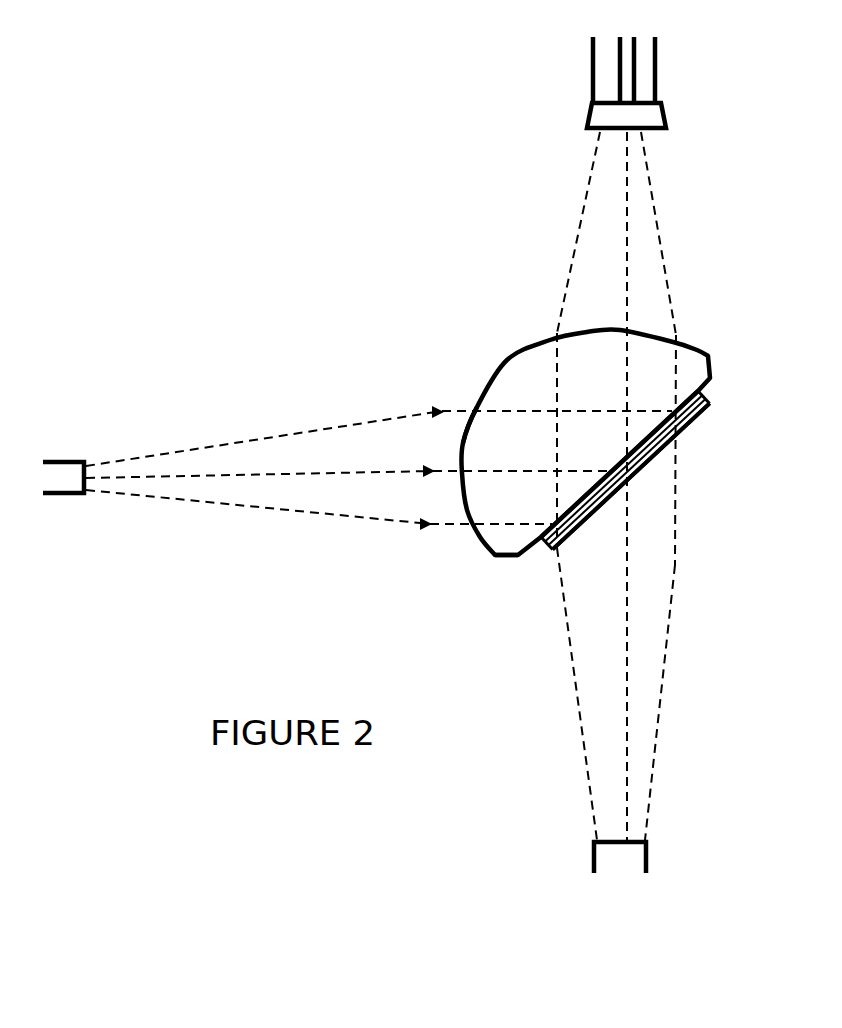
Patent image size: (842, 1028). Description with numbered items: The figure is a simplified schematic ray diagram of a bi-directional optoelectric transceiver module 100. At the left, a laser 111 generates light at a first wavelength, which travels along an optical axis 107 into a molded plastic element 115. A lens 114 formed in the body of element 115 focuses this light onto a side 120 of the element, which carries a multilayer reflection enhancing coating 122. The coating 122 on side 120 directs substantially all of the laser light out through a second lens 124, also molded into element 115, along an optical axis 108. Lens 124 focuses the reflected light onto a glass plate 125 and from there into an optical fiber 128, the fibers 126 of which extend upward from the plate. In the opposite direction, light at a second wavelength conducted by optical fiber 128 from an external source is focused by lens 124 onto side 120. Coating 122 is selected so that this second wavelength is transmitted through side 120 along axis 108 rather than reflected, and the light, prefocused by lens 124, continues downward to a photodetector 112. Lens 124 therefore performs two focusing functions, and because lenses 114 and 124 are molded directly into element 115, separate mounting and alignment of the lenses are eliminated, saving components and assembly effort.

The bi-directional optoelectric transceiver module 100 is at (352, 200).
The optical axis 107 is at (327, 543).
The optical axis 108 is at (684, 222).
The laser 111 is at (58, 462).
The photodetector 112 is at (650, 852).
The lens 114 is at (466, 430).
The element 115 is at (480, 556).
The side 120 is at (543, 548).
The reflection enhancing coating 122 is at (715, 402).
The lens 124 is at (578, 343).
The glass plate 125 is at (665, 118).
The optical fibers 126 is at (640, 77).
The optical fiber 128 is at (552, 77).